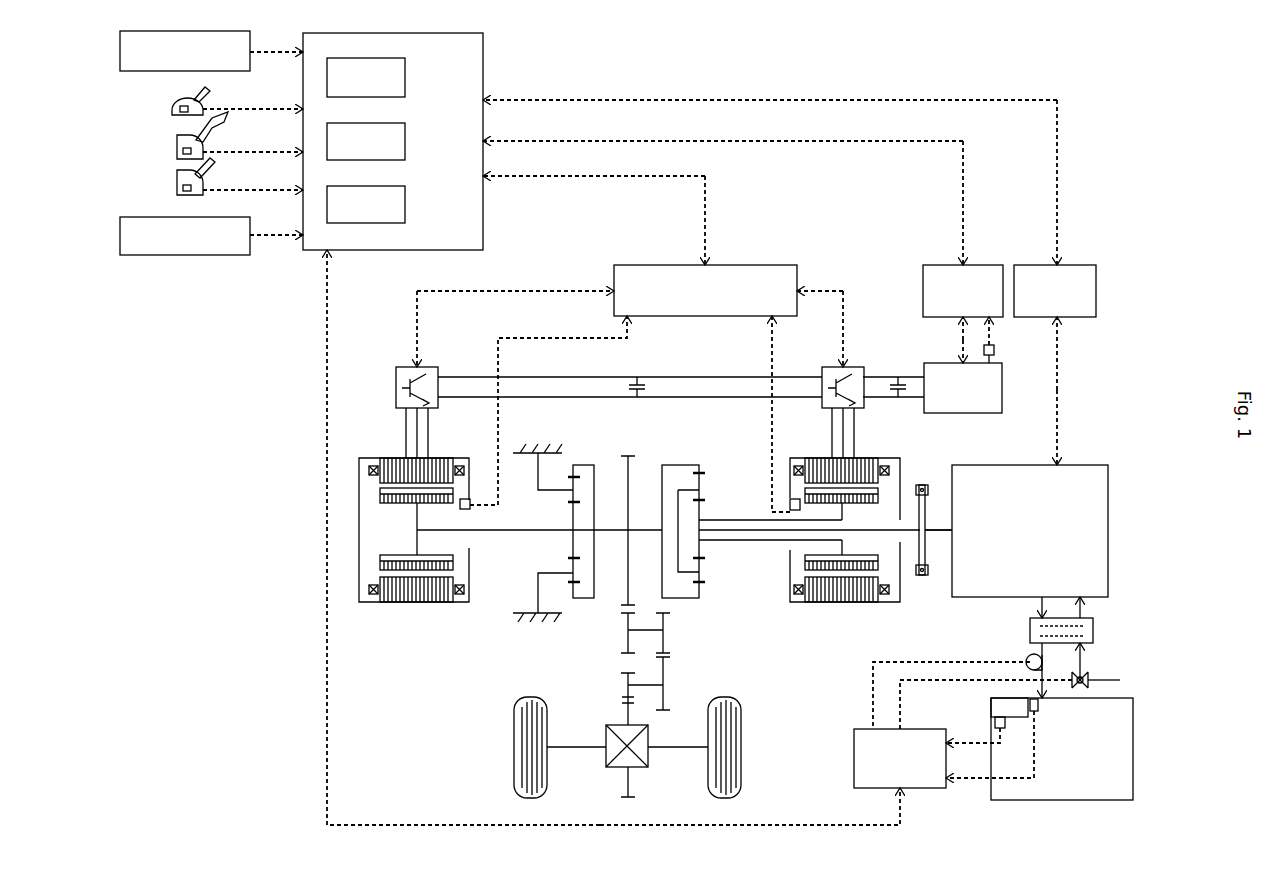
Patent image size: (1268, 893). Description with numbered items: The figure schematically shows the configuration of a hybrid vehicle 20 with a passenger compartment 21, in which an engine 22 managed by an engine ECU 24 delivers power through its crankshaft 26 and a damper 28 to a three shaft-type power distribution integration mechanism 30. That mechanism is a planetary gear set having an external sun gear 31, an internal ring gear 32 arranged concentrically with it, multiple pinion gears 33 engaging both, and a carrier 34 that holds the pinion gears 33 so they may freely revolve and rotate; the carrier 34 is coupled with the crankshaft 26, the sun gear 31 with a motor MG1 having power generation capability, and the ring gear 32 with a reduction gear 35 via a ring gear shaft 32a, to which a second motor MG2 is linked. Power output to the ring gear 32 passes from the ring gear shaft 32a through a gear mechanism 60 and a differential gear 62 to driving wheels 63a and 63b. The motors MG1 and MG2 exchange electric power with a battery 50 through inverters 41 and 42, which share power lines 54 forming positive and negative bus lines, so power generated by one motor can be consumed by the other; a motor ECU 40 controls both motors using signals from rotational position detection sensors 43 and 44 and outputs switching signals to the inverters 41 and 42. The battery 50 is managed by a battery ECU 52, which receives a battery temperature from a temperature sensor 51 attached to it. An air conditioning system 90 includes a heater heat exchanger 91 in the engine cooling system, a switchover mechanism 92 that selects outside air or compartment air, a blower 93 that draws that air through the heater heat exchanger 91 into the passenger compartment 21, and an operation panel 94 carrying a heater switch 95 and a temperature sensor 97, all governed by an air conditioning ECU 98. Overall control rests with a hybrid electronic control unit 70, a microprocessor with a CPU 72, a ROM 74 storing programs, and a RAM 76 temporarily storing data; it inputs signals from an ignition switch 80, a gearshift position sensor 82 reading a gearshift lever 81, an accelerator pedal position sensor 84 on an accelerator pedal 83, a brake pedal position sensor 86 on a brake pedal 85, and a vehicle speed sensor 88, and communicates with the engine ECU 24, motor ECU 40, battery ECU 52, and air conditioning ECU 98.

The hybrid vehicle 20 is at (870, 76).
The passenger compartment 21 is at (1133, 752).
The engine 22 is at (1010, 465).
The engine ECU 24 is at (1073, 265).
The crankshaft 26 is at (935, 530).
The damper 28 is at (924, 575).
The power distribution integration mechanism 30 is at (716, 517).
The sun gear 31 is at (699, 543).
The ring gear 32 is at (699, 590).
The ring gear shaft 32a is at (613, 528).
The pinion gears 33 is at (699, 567).
The carrier 34 is at (673, 500).
The reduction gear 35 is at (576, 446).
The motor ECU 40 is at (742, 265).
The inverter 41 is at (857, 367).
The inverter 42 is at (432, 367).
The rotational position detection sensor 43 is at (792, 499).
The rotational position detection sensor 44 is at (465, 498).
The battery 50 is at (963, 413).
The temperature sensor 51 is at (994, 348).
The battery ECU 52 is at (942, 265).
The power lines 54 is at (688, 397).
The gear mechanism 60 is at (702, 665).
The differential gear 62 is at (650, 757).
The driving wheel 63a is at (514, 778).
The driving wheel 63b is at (745, 780).
The hybrid electronic control unit 70 is at (483, 70).
The CPU 72 is at (405, 80).
The ROM 74 is at (405, 143).
The RAM 76 is at (405, 206).
The ignition switch 80 is at (120, 44).
The gearshift lever 81 is at (203, 92).
The gearshift position sensor 82 is at (172, 108).
The accelerator pedal 83 is at (205, 133).
The accelerator pedal position sensor 84 is at (177, 150).
The brake pedal 85 is at (200, 166).
The brake pedal position sensor 86 is at (177, 190).
The vehicle speed sensor 88 is at (120, 228).
The air conditioning system 90 is at (1003, 715).
The heater heat exchanger 91 is at (1093, 622).
The switchover mechanism 92 is at (1090, 672).
The blower 93 is at (1028, 658).
The operation panel 94 is at (993, 705).
The heater switch 95 is at (995, 722).
The temperature sensor 97 is at (1040, 705).
The air conditioning ECU 98 is at (920, 790).
The motor MG1 is at (870, 602).
The motor MG2 is at (393, 458).